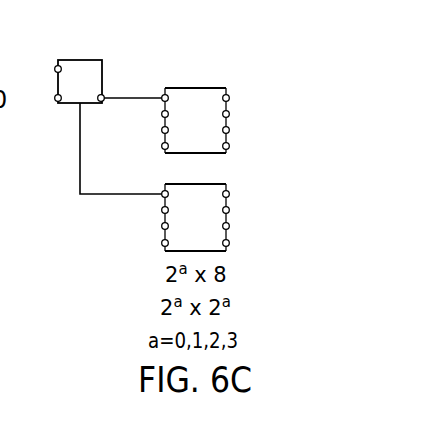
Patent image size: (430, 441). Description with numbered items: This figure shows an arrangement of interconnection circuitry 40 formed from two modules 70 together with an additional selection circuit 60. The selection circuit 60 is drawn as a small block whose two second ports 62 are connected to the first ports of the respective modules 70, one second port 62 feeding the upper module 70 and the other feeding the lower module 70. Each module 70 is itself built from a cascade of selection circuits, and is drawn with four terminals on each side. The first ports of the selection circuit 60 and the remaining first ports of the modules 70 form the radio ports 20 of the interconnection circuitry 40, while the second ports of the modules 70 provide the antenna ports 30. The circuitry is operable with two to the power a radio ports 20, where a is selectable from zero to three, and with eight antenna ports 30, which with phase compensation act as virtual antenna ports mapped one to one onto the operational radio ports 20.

The radio ports 20 is at (55, 68).
The antenna ports 30 is at (229, 99).
The interconnection circuitry 40 is at (151, 61).
The selection circuit 60 is at (82, 60).
The second ports 62 is at (104, 96).
The module 70 is at (200, 88).